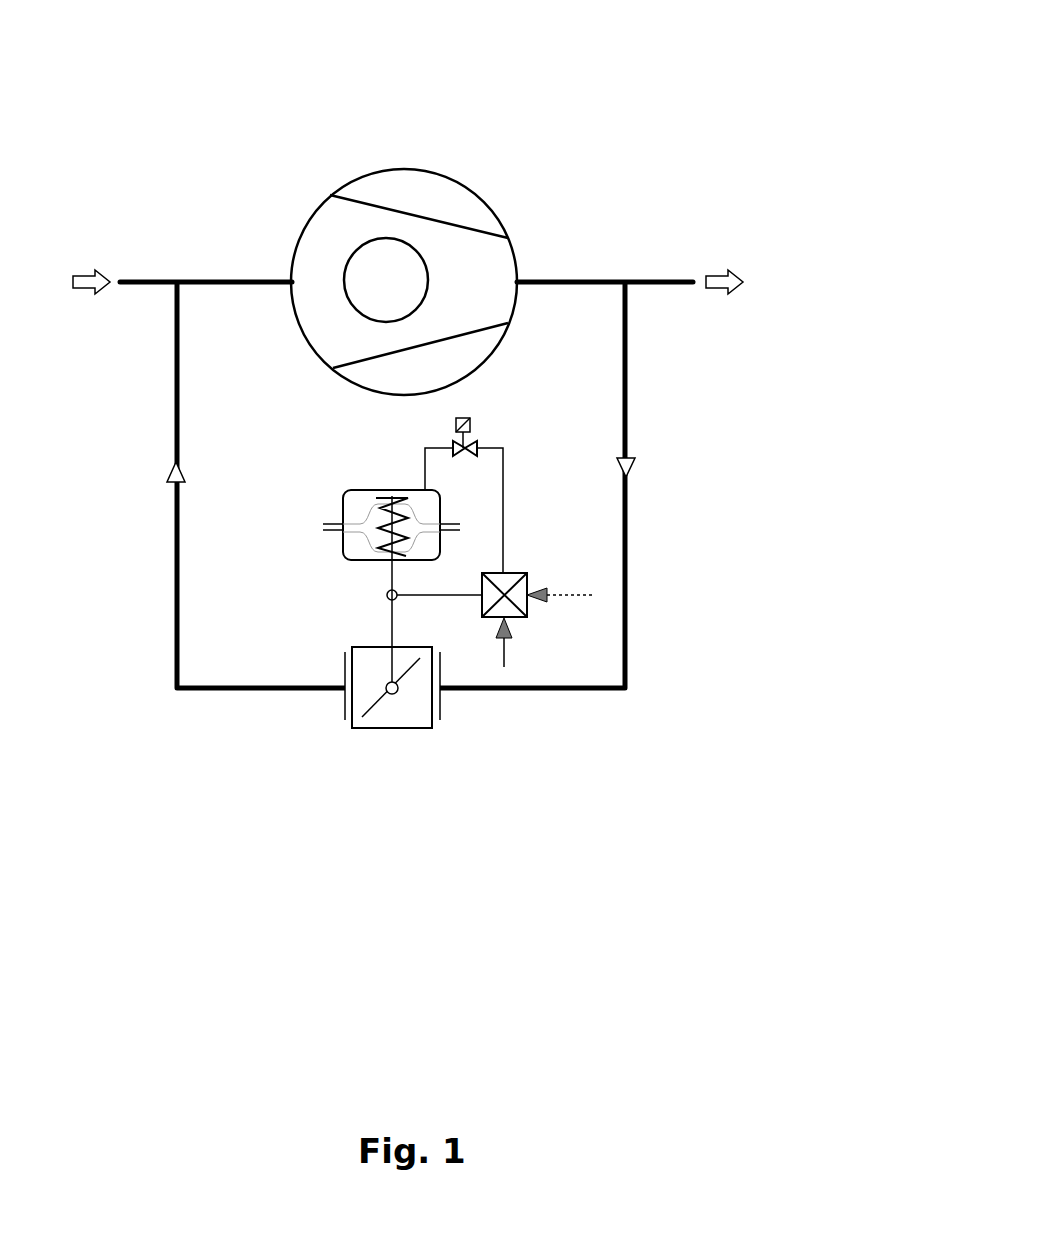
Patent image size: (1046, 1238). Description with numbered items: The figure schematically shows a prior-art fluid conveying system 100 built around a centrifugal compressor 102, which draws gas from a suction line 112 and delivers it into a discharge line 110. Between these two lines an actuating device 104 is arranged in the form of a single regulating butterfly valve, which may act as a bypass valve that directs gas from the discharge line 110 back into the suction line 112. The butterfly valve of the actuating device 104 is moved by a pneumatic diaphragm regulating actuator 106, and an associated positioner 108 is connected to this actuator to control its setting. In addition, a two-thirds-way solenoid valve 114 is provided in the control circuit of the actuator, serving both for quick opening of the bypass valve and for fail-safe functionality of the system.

The fluid conveying system 100 is at (618, 152).
The centrifugal compressor 102 is at (422, 192).
The actuating device 104 is at (322, 726).
The pneumatic diaphragm regulating actuator 106 is at (325, 550).
The positioner 108 is at (508, 580).
The discharge line 110 is at (603, 278).
The suction line 112 is at (148, 278).
The ⅔-way solenoid valve 114 is at (486, 426).